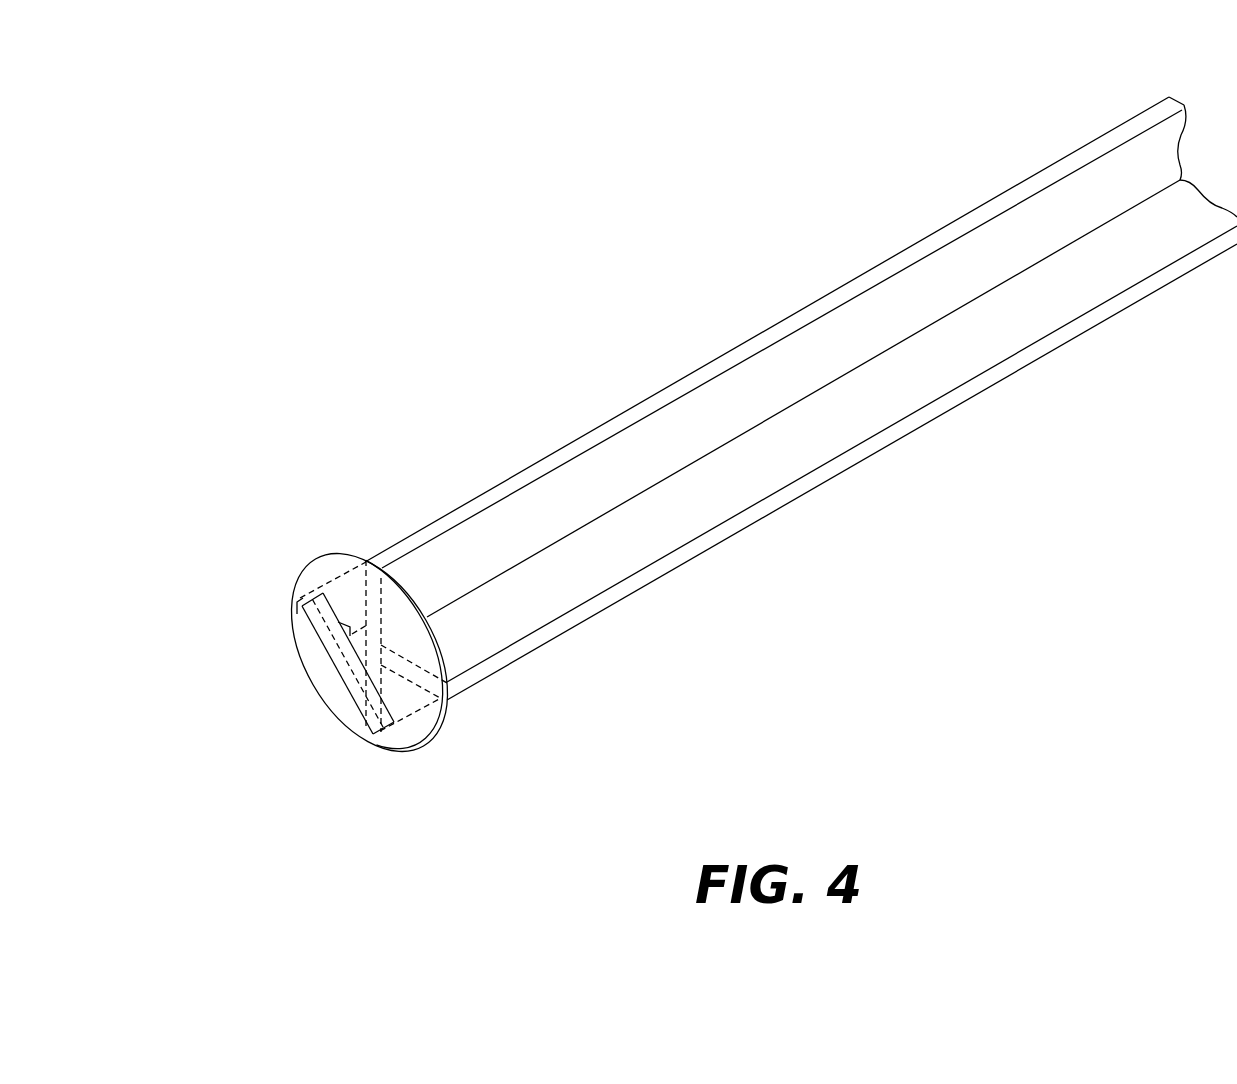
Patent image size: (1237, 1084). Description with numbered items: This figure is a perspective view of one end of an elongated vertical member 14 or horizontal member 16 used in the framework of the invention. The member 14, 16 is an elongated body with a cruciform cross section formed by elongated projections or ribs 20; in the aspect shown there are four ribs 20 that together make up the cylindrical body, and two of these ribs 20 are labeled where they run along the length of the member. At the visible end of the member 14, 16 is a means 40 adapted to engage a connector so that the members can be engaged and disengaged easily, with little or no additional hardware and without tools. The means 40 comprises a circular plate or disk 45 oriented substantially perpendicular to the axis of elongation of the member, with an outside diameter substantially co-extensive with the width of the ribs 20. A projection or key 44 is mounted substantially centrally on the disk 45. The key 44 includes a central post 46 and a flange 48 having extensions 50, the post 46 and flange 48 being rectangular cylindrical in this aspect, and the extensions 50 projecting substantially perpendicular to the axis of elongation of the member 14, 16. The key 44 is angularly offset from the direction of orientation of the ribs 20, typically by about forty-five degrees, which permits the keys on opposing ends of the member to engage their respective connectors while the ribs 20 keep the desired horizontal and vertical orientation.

The vertical member 14 is at (828, 182).
The horizontal member 16 is at (832, 402).
The rib 20 is at (748, 343).
The means for engaging connectors 40 is at (243, 570).
The key 44 is at (347, 681).
The disk 45 is at (297, 616).
The central post 46 is at (355, 633).
The flange 48 is at (336, 657).
The extensions 50 is at (312, 605).